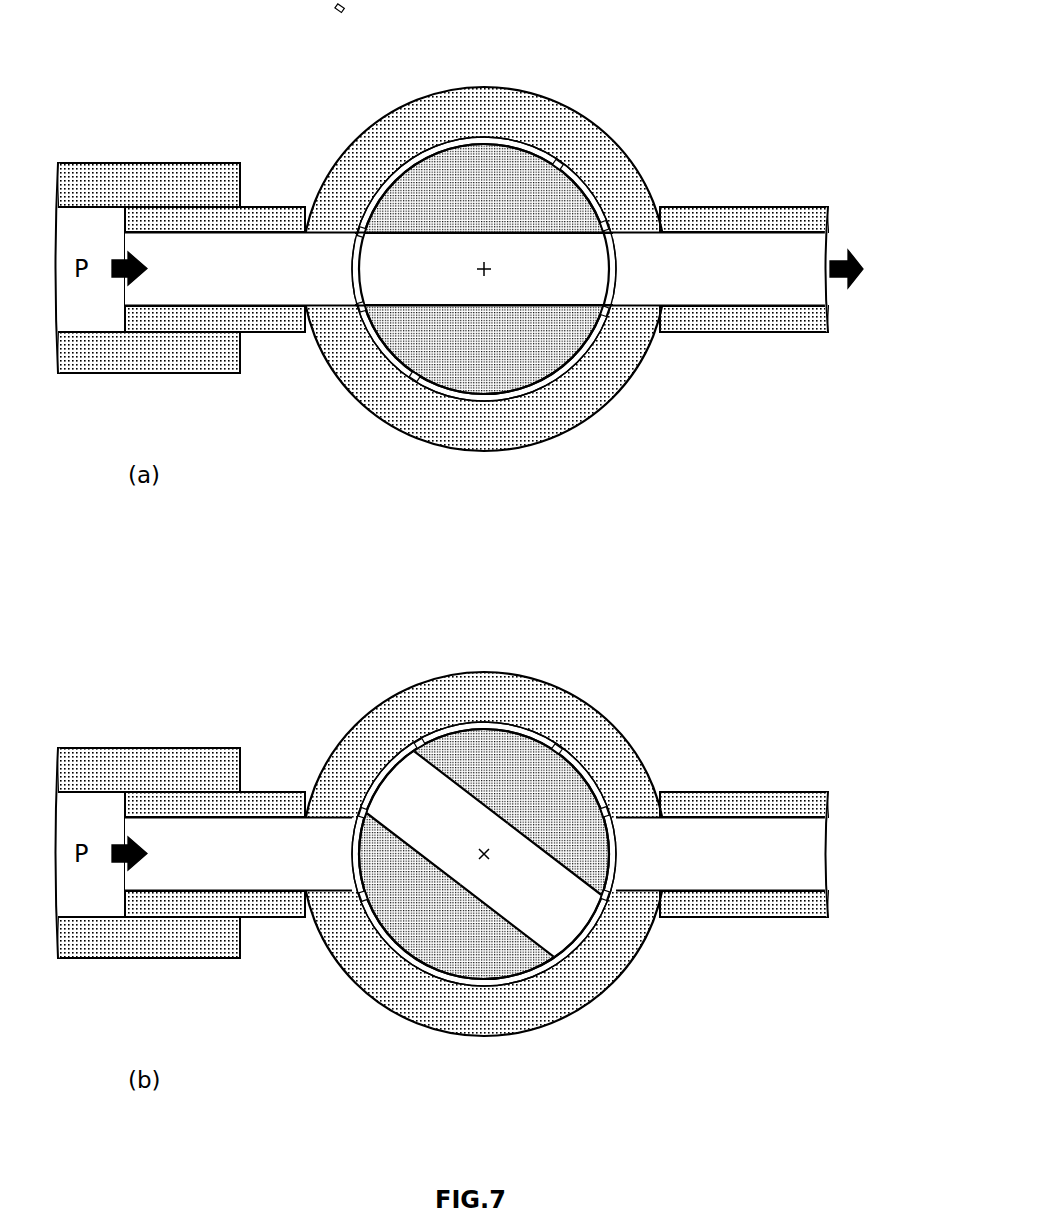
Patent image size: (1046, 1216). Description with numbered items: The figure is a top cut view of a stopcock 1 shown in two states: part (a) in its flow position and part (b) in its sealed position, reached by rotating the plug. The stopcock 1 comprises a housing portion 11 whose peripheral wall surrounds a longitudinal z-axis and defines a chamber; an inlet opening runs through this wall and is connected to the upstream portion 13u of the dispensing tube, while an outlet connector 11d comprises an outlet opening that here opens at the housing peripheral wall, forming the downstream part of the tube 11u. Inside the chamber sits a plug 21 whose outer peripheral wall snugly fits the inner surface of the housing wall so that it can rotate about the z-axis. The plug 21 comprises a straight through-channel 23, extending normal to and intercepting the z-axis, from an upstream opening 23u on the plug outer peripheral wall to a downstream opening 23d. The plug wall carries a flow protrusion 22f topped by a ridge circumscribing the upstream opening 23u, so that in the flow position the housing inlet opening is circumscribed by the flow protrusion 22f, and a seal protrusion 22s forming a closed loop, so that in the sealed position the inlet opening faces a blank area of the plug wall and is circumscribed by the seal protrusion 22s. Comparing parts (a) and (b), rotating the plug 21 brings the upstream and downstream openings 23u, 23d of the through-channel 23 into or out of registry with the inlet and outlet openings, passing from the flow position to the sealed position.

The stopcock 1 is at (467, 493).
The housing portion 11 is at (383, 110).
The upstream pipe portion 11u is at (288, 205).
The outlet connector 11d is at (750, 200).
The upstream portion of the dispensing tube 13u is at (155, 163).
The plug 21 is at (513, 185).
The flow protrusion 22f is at (357, 234).
The seal protrusion 22s is at (357, 887).
The through-channel 23 is at (557, 283).
The upstream opening 23u is at (410, 773).
The downstream opening 23d is at (593, 930).